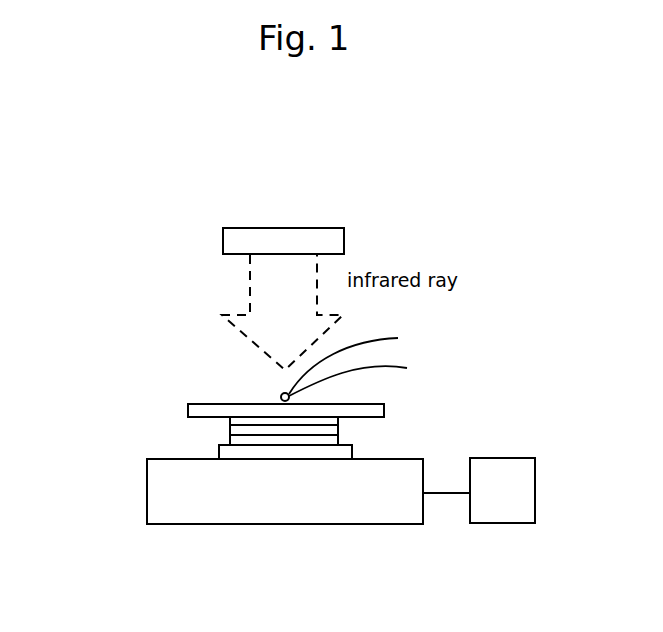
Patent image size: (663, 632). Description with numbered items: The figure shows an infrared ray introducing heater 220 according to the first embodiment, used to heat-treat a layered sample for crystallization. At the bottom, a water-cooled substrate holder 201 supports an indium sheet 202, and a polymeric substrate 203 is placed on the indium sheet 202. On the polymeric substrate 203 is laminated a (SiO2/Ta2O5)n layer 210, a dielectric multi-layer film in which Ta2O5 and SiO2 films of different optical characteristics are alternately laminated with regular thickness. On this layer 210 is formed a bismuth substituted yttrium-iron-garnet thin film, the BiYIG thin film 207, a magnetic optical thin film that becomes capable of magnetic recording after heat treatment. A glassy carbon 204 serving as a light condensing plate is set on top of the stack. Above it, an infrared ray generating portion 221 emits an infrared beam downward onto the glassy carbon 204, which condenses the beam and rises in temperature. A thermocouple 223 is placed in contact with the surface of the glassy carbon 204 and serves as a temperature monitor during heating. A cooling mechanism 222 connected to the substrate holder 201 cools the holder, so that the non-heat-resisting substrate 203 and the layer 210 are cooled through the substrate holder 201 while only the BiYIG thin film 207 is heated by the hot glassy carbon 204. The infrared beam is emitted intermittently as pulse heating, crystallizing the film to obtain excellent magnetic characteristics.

The infrared ray introducing heater 220 is at (486, 244).
The infrared ray generating portion 221 is at (345, 230).
The thermocouple 223 is at (281, 395).
The glassy carbon 204 is at (385, 412).
The BiYIG thin film 207 is at (338, 420).
The (SiO2/Ta2O5)n layer 210 is at (338, 430).
The polymeric substrate 203 is at (338, 441).
The indium sheet 202 is at (220, 451).
The substrate holder 201 is at (180, 493).
The cooling mechanism 222 is at (514, 523).